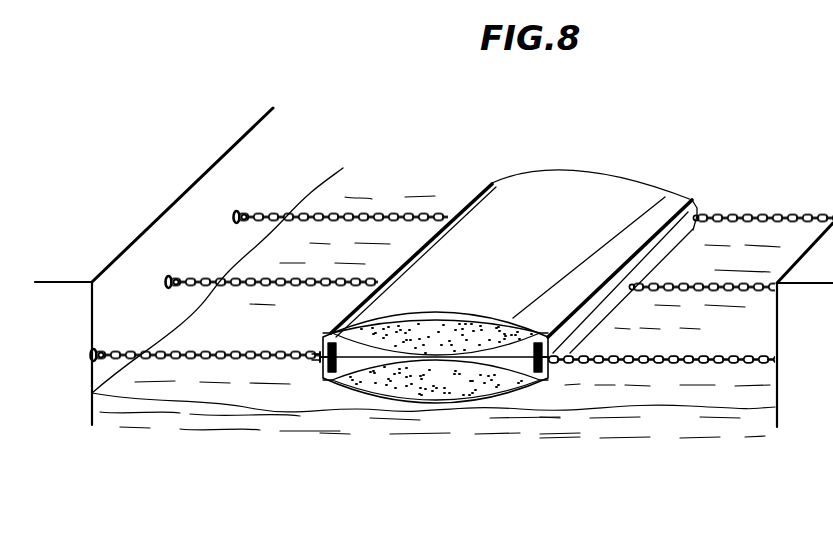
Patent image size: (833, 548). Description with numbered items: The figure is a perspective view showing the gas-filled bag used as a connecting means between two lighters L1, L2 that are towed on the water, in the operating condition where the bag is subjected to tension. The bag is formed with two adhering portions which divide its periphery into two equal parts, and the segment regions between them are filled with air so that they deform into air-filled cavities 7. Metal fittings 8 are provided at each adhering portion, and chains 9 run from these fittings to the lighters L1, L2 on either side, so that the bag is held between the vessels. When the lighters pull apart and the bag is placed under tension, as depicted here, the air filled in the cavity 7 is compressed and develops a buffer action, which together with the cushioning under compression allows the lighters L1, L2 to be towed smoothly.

The air-filled cavity 7 is at (457, 342).
The metal fitting 8 is at (315, 351).
The anchor chain 9 is at (663, 355).
The lighter L1 is at (118, 212).
The lighter L2 is at (810, 262).